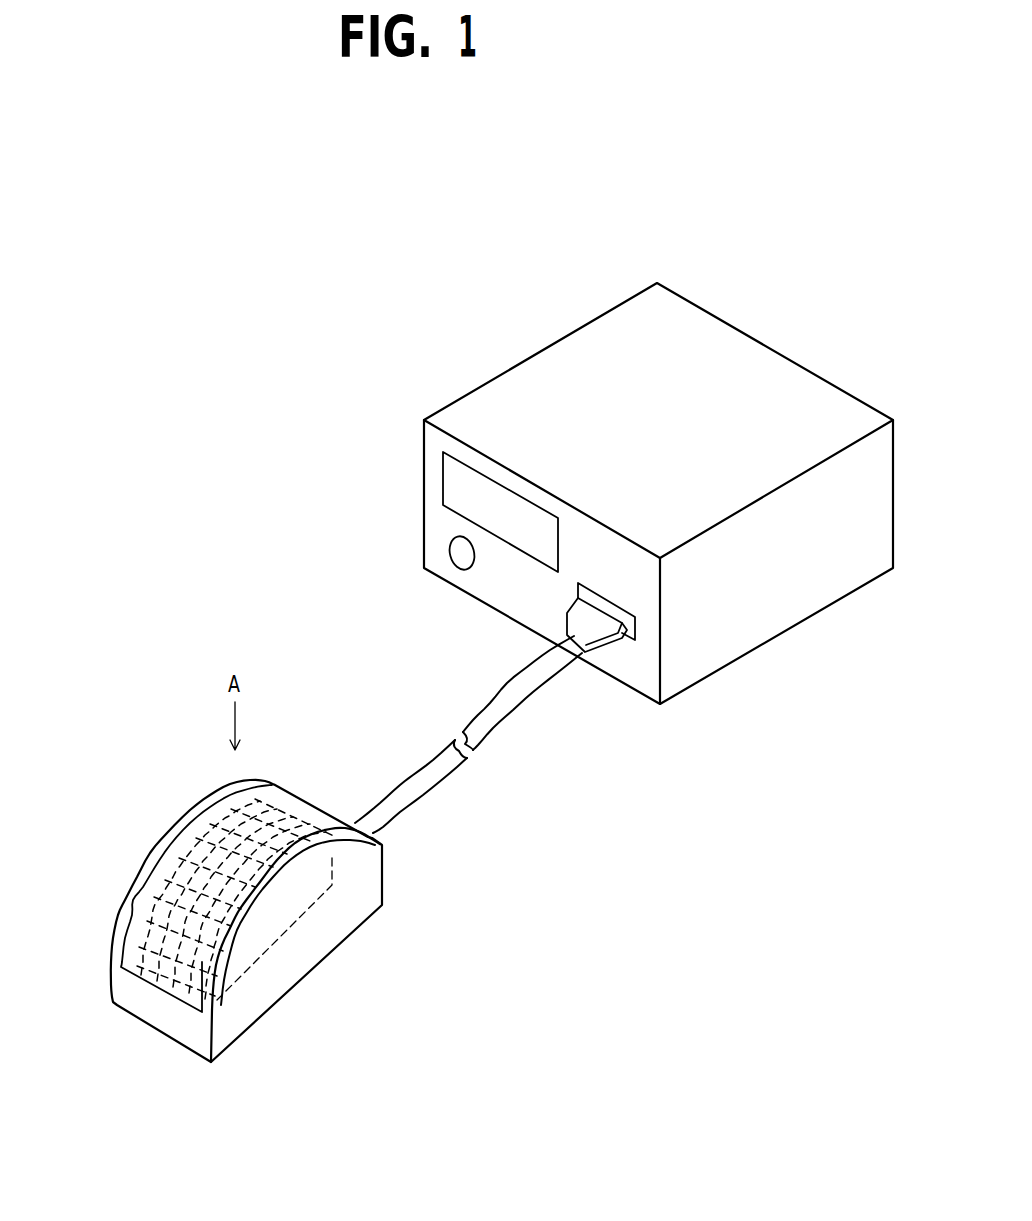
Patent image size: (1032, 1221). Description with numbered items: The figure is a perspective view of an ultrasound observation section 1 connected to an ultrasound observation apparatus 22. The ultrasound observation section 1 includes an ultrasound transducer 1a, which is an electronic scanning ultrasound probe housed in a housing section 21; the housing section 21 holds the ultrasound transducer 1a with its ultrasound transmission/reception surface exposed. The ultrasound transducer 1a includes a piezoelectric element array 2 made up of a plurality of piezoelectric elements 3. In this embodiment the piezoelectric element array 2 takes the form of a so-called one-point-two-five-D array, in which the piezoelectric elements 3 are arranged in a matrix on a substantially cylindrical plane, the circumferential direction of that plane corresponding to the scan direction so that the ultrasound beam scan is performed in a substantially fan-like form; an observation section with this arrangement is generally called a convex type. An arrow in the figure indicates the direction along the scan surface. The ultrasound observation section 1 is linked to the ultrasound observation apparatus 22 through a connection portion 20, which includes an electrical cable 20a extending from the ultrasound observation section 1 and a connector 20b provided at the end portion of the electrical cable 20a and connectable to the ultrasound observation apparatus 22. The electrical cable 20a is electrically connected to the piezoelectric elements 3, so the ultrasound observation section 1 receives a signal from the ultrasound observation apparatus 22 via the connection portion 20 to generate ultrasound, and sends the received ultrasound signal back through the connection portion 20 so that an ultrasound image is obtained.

The ultrasound observation section 1 is at (237, 890).
The ultrasound transducer 1a is at (328, 918).
The piezoelectric element array 2 is at (246, 902).
The piezoelectric elements 3 is at (183, 860).
The connection portion 20 is at (508, 715).
The electrical cable 20a is at (468, 734).
The connector 20b is at (622, 642).
The housing section 21 is at (286, 984).
The ultrasound observation apparatus 22 is at (518, 367).